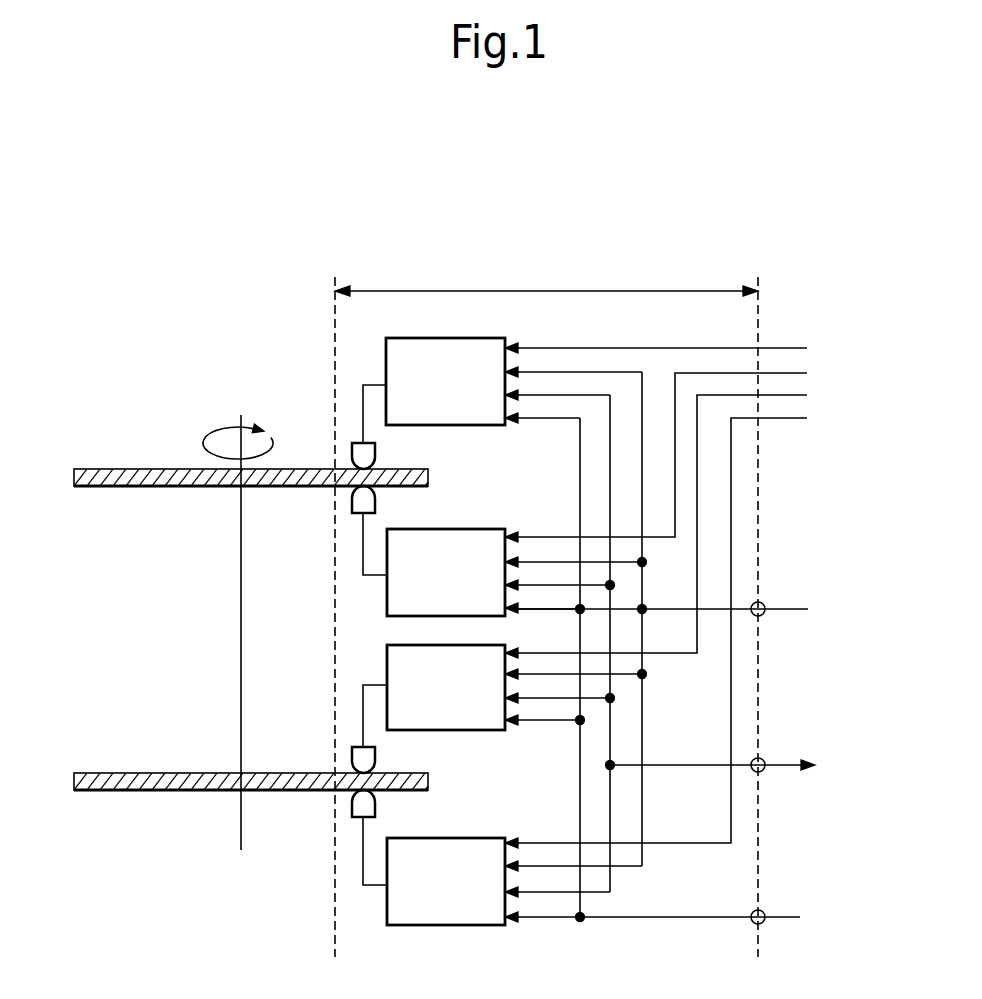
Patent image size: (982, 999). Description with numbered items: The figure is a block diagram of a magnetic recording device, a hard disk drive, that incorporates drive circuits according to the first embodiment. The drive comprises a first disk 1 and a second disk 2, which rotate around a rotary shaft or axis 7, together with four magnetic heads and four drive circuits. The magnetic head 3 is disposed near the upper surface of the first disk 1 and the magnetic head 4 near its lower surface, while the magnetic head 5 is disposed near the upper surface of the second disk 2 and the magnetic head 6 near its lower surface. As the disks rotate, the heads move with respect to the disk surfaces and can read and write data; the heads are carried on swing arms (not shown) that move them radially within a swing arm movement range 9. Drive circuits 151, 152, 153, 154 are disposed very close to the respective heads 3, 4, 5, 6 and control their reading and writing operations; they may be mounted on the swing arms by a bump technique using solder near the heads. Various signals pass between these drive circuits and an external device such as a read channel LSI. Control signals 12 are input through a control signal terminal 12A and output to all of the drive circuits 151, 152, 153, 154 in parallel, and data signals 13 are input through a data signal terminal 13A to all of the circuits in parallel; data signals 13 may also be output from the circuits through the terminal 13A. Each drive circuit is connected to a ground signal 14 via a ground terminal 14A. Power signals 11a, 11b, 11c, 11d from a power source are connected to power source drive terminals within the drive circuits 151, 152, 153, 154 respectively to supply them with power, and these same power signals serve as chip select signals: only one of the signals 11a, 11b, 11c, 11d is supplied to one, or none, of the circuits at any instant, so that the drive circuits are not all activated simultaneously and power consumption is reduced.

The first disk 1 is at (128, 469).
The second disk 2 is at (128, 773).
The magnetic head 3 is at (352, 460).
The magnetic head 4 is at (352, 505).
The magnetic head 5 is at (352, 762).
The magnetic head 6 is at (352, 808).
The rotary shaft 7 is at (241, 833).
The swing arm movement range 9 is at (405, 291).
The power signal 11a is at (772, 348).
The power signal 11b is at (772, 375).
The power signal 11c is at (772, 397).
The power signal 11d is at (772, 420).
The control signals 12 is at (790, 612).
The control signal terminal 12A is at (766, 603).
The data signals 13 is at (790, 768).
The data signal terminal 13A is at (766, 759).
The ground signal 14 is at (790, 920).
The ground terminal 14A is at (766, 911).
The drive circuit 151 is at (450, 425).
The drive circuit 152 is at (455, 529).
The drive circuit 153 is at (460, 730).
The drive circuit 154 is at (457, 838).